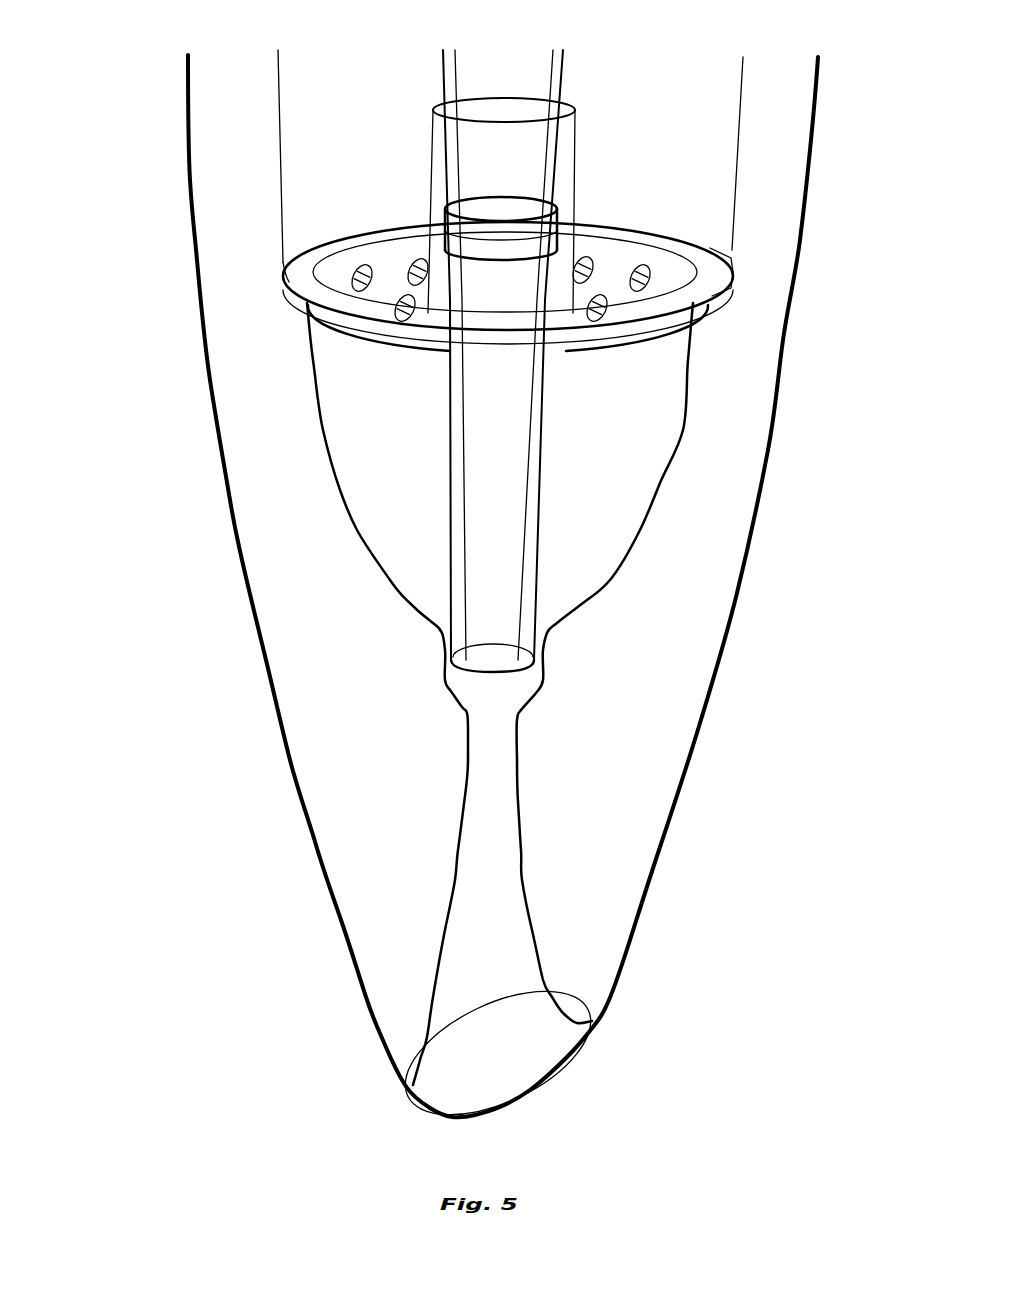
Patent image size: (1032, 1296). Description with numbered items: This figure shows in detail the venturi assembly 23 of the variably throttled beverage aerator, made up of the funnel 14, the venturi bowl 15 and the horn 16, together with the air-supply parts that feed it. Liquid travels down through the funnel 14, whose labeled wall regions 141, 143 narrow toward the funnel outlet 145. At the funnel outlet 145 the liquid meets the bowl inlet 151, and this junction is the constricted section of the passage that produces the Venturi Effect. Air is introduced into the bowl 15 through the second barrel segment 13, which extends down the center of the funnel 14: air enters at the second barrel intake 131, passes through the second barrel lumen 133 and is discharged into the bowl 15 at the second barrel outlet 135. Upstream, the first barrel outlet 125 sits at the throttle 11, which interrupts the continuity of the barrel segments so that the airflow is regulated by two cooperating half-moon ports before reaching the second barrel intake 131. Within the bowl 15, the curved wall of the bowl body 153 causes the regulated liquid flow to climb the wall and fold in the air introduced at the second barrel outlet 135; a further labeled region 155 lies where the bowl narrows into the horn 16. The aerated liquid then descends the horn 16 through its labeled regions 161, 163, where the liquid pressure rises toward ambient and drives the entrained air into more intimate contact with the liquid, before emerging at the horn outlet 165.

The venturi assembly 23 is at (144, 76).
The throttle 11 is at (404, 202).
The first barrel outlet 125 is at (516, 188).
The second barrel segment 13 is at (586, 450).
The second barrel intake 131 is at (511, 358).
The second barrel lumen 133 is at (512, 490).
The second barrel outlet 135 is at (511, 628).
The funnel 14 is at (303, 479).
The bowl upper portion 141 is at (348, 353).
The bowl middle portion 143 is at (409, 447).
The funnel outlet 145 is at (437, 592).
The venturi bowl 15 is at (585, 646).
The bowl inlet 151 is at (550, 633).
The bowl body 153 is at (535, 670).
The neck bore 155 is at (523, 693).
The horn 16 is at (416, 891).
The stem upper portion 161 is at (509, 743).
The stem tapered portion 163 is at (509, 910).
The horn outlet 165 is at (508, 1058).